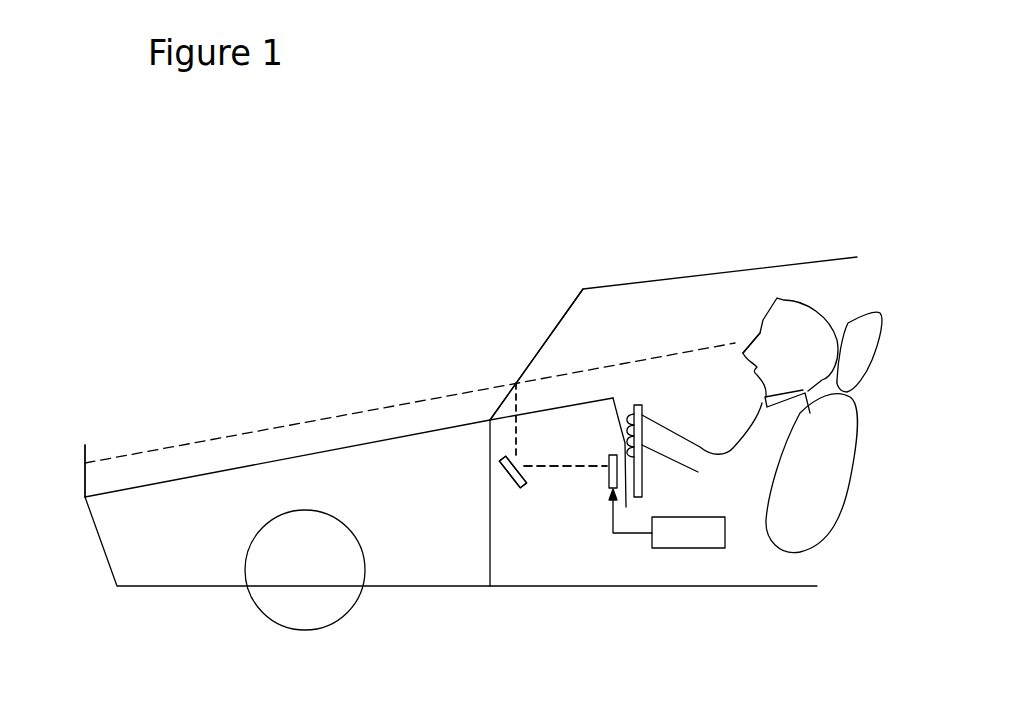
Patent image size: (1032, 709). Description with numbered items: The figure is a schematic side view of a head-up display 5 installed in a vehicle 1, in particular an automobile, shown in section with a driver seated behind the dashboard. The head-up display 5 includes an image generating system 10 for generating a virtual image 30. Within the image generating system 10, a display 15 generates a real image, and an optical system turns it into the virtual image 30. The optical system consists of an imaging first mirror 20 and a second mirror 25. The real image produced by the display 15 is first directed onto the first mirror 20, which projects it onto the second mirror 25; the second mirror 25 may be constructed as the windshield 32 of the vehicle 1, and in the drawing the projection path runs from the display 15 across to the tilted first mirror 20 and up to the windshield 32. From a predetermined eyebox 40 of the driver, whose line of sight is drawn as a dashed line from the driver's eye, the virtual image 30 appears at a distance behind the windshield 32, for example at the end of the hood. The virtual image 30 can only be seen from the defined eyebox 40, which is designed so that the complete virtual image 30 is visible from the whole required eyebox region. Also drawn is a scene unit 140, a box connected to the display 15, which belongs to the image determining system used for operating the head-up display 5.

The vehicle 1 is at (672, 263).
The head-up display 5 is at (467, 362).
The image generating system 10 is at (565, 492).
The display 15 is at (608, 483).
The first mirror 20 is at (508, 477).
The second mirror 25 is at (517, 374).
The virtual image 30 is at (84, 473).
The windshield 32 is at (547, 341).
The eyebox 40 is at (733, 342).
The scene unit 140 is at (682, 513).